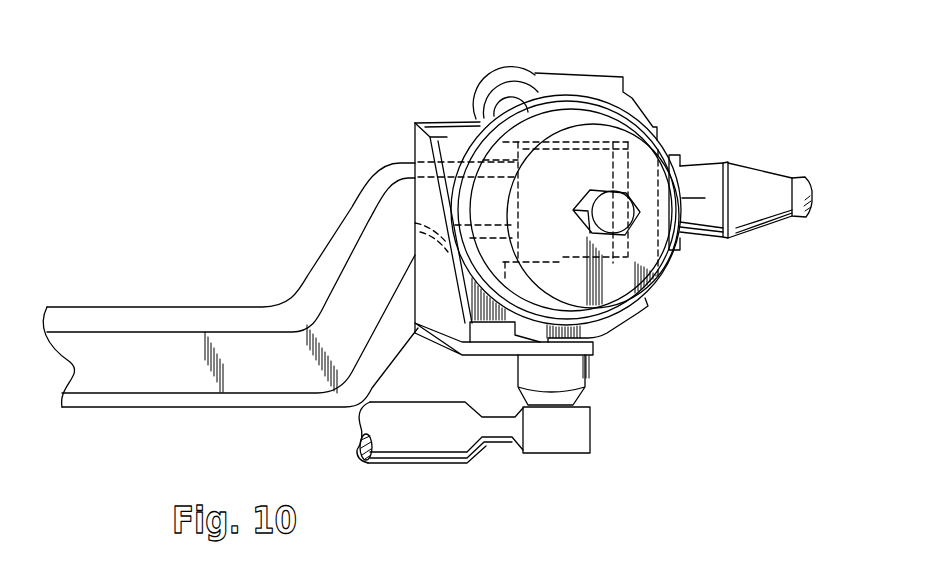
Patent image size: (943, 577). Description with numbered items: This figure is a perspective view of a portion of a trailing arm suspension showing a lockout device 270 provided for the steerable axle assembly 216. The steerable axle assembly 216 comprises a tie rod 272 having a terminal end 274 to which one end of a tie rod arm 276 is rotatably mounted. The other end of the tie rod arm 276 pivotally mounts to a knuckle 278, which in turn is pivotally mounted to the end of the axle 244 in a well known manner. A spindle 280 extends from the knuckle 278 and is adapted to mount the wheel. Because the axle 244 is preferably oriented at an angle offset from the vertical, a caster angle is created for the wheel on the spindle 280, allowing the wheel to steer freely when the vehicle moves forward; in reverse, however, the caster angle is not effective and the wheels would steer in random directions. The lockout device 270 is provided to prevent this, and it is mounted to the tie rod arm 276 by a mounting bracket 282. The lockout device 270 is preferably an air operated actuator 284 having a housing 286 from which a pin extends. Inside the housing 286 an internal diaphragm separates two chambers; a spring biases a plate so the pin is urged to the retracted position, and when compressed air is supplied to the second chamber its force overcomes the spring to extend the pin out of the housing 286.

The steerable axle assembly 216 is at (129, 305).
The axle 244 is at (190, 353).
The mounting bracket 282 is at (413, 143).
The lockout device 270 is at (570, 93).
The knuckle 278 is at (636, 102).
The housing 286 is at (642, 153).
The air operated actuator 284 is at (660, 275).
The spindle 280 is at (728, 165).
The tie rod arm 276 is at (580, 398).
The terminal end 274 is at (590, 433).
The tie rod 272 is at (398, 467).